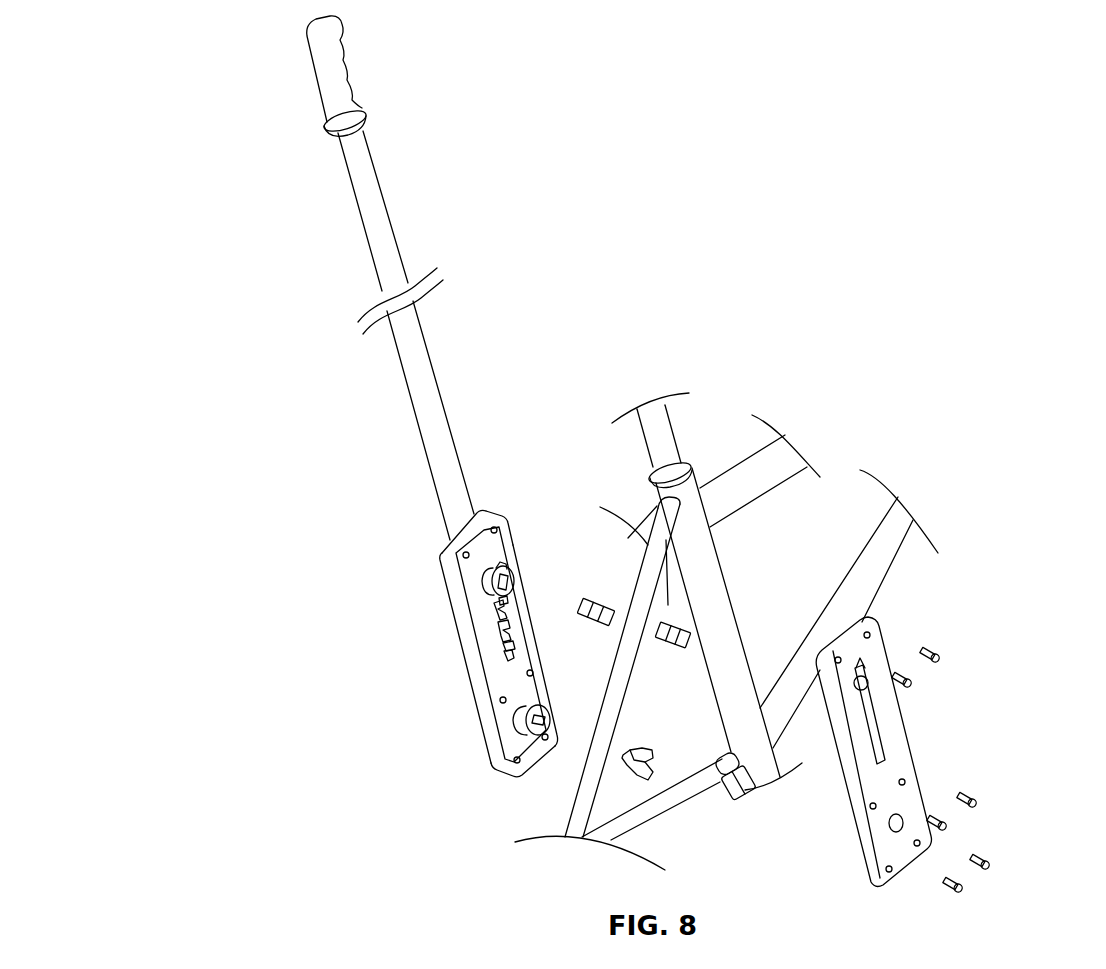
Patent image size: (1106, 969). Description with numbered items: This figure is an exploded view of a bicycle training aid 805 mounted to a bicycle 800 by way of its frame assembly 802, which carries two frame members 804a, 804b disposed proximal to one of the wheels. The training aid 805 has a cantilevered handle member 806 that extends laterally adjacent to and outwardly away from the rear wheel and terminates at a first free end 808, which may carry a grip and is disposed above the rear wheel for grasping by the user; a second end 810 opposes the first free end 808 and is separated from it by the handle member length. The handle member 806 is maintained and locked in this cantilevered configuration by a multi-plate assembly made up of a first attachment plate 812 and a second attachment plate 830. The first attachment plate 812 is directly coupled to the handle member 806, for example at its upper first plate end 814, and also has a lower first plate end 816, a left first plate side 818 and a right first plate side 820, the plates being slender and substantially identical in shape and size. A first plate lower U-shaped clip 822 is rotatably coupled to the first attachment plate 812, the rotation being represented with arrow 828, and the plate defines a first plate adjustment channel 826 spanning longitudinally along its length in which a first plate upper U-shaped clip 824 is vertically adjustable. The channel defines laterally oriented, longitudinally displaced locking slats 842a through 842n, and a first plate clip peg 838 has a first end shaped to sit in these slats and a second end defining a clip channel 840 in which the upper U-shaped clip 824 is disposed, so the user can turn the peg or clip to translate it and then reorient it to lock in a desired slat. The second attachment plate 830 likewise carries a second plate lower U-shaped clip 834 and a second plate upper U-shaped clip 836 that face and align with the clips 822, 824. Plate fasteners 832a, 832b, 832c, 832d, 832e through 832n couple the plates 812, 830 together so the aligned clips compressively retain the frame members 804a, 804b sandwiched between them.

The bicycle 800 is at (746, 438).
The frame assembly 802 is at (652, 480).
The frame member 804a is at (640, 600).
The frame member 804b is at (653, 807).
The bicycle training aid 805 is at (282, 419).
The cantilevered handle member 806 is at (410, 387).
The first free end 808 is at (297, 47).
The second end 810 is at (440, 525).
The first attachment plate 812 is at (481, 588).
The upper first plate end 814 is at (450, 538).
The lower first plate end 816 is at (507, 782).
The left first plate side 818 is at (465, 654).
The right first plate side 820 is at (512, 522).
The first plate lower U-shaped clip 822 is at (556, 727).
The first plate upper U-shaped clip 824 is at (579, 607).
The first plate adjustment channel 826 is at (497, 650).
The arrow 828 is at (636, 750).
The second attachment plate 830 is at (897, 750).
The plate fastener 832a is at (930, 650).
The plate fastener 832b is at (967, 795).
The plate fastener 832c is at (980, 857).
The plate fastener 832d is at (898, 683).
The plate fastener 832e is at (930, 826).
The plate fastener 832n is at (950, 886).
The second plate lower U-shaped clip 834 is at (729, 791).
The second plate upper U-shaped clip 836 is at (672, 626).
The first plate clip peg 838 is at (481, 608).
The clip channel 840 is at (501, 574).
The locking slat 842a is at (520, 643).
The locking slat 842n is at (494, 612).